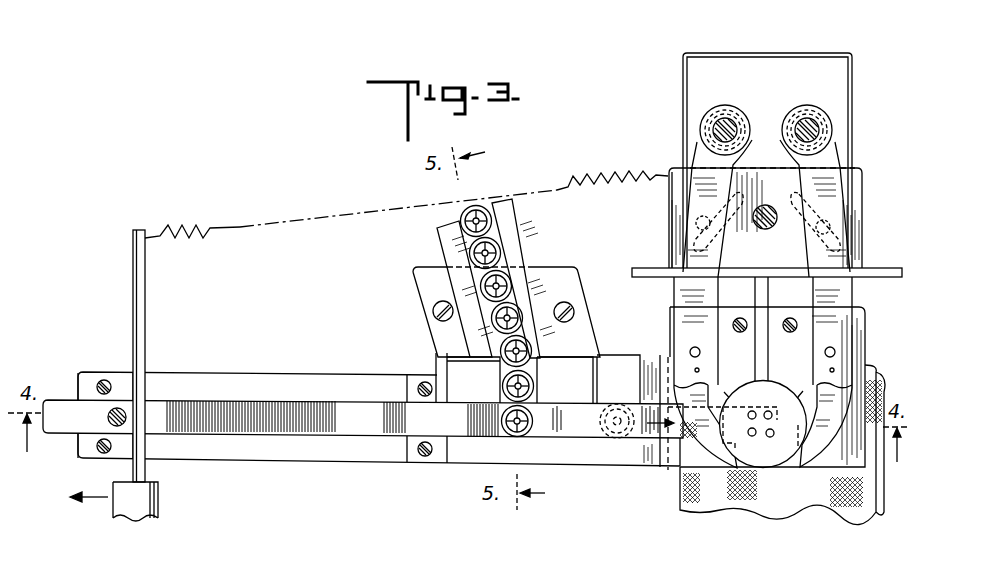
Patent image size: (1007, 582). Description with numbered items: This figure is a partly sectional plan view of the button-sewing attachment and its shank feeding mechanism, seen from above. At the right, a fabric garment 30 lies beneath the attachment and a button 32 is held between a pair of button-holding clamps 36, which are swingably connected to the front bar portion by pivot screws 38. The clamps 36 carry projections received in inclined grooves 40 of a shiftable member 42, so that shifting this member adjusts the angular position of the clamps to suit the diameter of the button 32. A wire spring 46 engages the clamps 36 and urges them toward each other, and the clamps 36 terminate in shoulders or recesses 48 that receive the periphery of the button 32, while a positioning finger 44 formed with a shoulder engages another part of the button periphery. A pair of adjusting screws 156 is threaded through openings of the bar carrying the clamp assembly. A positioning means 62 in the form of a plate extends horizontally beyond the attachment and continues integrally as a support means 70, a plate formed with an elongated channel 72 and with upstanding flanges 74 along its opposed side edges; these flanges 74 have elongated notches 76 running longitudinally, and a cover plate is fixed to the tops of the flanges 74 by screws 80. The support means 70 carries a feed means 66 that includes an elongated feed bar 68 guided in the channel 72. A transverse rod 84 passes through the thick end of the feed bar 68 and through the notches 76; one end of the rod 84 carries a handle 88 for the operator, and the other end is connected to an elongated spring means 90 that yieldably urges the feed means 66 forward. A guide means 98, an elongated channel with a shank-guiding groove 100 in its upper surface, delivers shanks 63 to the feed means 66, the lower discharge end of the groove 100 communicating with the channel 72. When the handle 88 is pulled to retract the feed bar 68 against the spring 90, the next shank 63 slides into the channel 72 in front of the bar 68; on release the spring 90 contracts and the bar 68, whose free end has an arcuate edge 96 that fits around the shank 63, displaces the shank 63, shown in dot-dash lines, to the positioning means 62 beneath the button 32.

The garment 30 is at (713, 500).
The button 32 is at (770, 468).
The button-holding clamps 36 is at (690, 296).
The pivot screws 38 is at (797, 126).
The inclined grooves 40 is at (670, 262).
The shiftable member 42 is at (855, 185).
The positioning finger 44 is at (760, 332).
The wire spring 46 is at (846, 68).
The shoulders or recesses 48 is at (760, 390).
The positioning means 62 is at (862, 355).
The shanks 63 is at (488, 287).
The feed means 66 is at (292, 373).
The elongated feed bar 68 is at (296, 422).
The support means 70 is at (612, 370).
The elongated channel 72 is at (587, 436).
The upstanding flanges 74 is at (80, 380).
The elongated notches 76 is at (240, 380).
The screws 80 is at (107, 380).
The transverse rod 84 is at (146, 333).
The handle 88 is at (145, 513).
The spring means 90 is at (180, 230).
The arcuate edge 96 is at (498, 422).
The guide means 98 is at (523, 271).
The shank-guiding groove 100 is at (500, 262).
The adjusting screws 156 is at (742, 318).